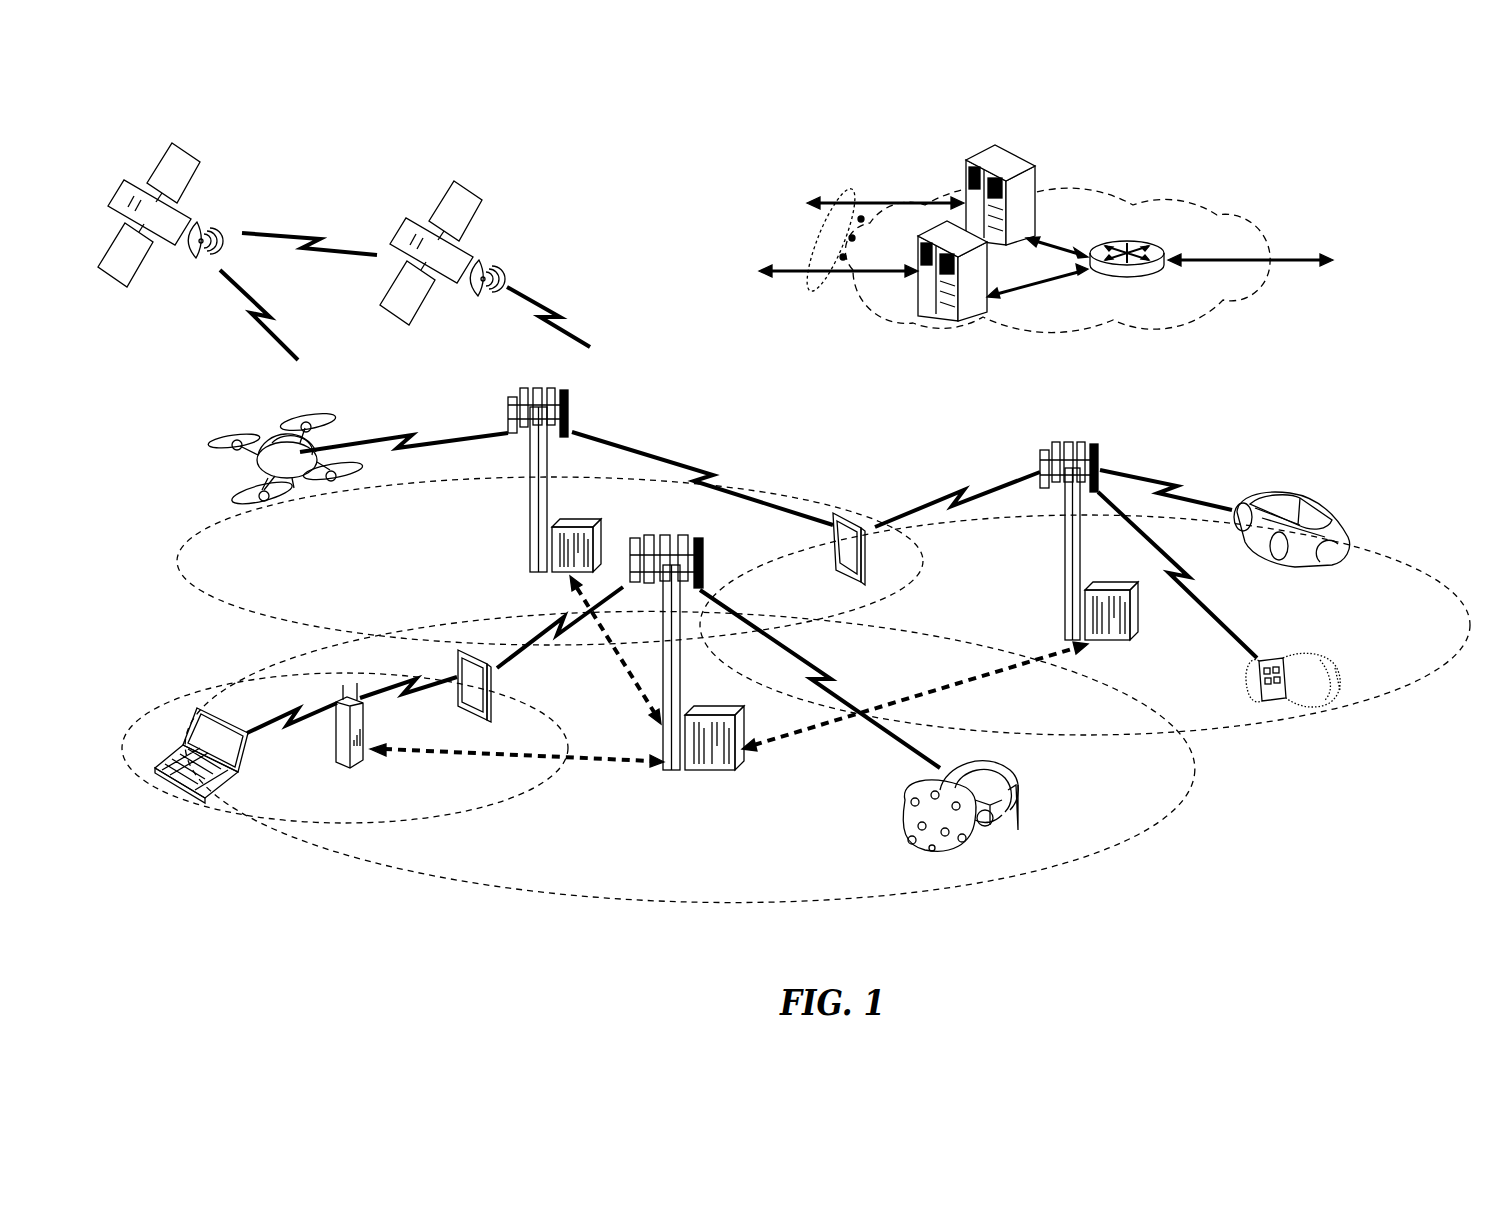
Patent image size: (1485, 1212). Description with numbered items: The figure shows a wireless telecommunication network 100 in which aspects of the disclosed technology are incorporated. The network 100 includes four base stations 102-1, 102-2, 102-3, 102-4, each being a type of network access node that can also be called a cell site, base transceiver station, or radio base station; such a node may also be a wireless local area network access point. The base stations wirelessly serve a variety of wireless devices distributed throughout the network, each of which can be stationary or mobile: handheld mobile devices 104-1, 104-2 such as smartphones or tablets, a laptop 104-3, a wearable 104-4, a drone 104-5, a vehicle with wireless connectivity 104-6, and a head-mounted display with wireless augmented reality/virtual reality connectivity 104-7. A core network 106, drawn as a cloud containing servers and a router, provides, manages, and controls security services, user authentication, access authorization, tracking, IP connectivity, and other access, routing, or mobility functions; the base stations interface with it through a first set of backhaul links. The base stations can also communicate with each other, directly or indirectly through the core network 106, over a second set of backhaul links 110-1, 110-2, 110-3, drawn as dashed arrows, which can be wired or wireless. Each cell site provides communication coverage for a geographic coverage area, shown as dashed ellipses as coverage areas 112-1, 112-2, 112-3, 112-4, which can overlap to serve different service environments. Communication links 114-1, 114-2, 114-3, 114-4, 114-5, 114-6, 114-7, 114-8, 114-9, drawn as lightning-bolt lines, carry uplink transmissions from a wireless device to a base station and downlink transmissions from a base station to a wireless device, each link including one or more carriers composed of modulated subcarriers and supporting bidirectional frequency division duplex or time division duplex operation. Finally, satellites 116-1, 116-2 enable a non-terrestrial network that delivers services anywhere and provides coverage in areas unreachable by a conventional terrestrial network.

The wireless telecommunication network 100 is at (1371, 178).
The base station 102-1 is at (668, 776).
The base station 102-2 is at (530, 517).
The base station 102-3 is at (1065, 557).
The base station 102-4 is at (337, 757).
The handheld mobile device 104-1 is at (490, 697).
The handheld mobile device 104-2 is at (833, 553).
The laptop 104-3 is at (177, 797).
The wearable 104-4 is at (1273, 657).
The drone 104-5 is at (293, 485).
The vehicle with wireless connectivity 104-6 is at (1317, 503).
The head-mounted display 104-7 is at (1012, 789).
The core network 106 is at (1159, 326).
The backhaul link 110-1 is at (407, 757).
The backhaul link 110-2 is at (987, 677).
The backhaul link 110-3 is at (632, 682).
The geographic coverage area 112-1 is at (599, 904).
The geographic coverage area 112-2 is at (477, 813).
The geographic coverage area 112-3 is at (243, 625).
The geographic coverage area 112-4 is at (1373, 553).
The communication link 114-1 is at (835, 676).
The communication link 114-2 is at (560, 623).
The communication link 114-3 is at (263, 733).
The communication link 114-4 is at (407, 697).
The communication link 114-5 is at (428, 432).
The communication link 114-6 is at (710, 470).
The communication link 114-7 is at (957, 490).
The communication link 114-8 is at (1180, 573).
The communication link 114-9 is at (1167, 480).
The satellite 116-1 is at (196, 230).
The satellite 116-2 is at (482, 265).